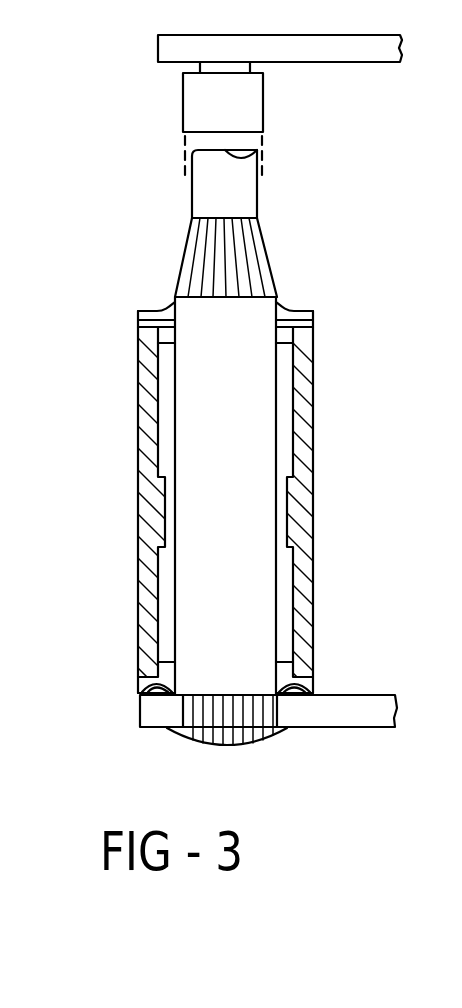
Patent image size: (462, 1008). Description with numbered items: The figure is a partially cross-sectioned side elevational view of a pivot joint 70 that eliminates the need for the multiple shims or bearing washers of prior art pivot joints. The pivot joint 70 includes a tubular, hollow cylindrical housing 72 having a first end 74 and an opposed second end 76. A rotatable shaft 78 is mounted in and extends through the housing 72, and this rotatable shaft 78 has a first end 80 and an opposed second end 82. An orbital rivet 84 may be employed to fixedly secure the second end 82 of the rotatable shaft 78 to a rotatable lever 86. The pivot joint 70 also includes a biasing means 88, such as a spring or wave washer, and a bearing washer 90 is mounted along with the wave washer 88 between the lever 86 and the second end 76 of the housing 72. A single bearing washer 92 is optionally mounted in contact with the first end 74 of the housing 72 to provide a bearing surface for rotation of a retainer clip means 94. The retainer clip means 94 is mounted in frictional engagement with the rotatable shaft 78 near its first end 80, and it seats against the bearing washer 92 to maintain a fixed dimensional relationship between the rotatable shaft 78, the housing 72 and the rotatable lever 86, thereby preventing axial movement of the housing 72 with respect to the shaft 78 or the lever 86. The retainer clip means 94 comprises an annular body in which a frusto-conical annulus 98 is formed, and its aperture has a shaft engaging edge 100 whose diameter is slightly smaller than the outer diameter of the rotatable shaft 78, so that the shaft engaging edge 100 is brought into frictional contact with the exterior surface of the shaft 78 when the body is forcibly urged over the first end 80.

The pivot joint 70 is at (106, 496).
The housing 72 is at (310, 516).
The first end of housing 74 is at (315, 348).
The second end of housing 76 is at (307, 672).
The rotatable shaft 78 is at (262, 424).
The first end of rotatable shaft 80 is at (255, 155).
The second end of rotatable shaft 82 is at (204, 686).
The orbital rivet 84 is at (228, 744).
The rotatable lever 86 is at (347, 722).
The biasing means 88 is at (142, 690).
The bearing washer 90 is at (318, 685).
The single bearing washer 92 is at (137, 322).
The retainer clip means 94 is at (150, 304).
The frusto-conical annulus 98 is at (290, 303).
The shaft engaging edge 100 is at (275, 306).